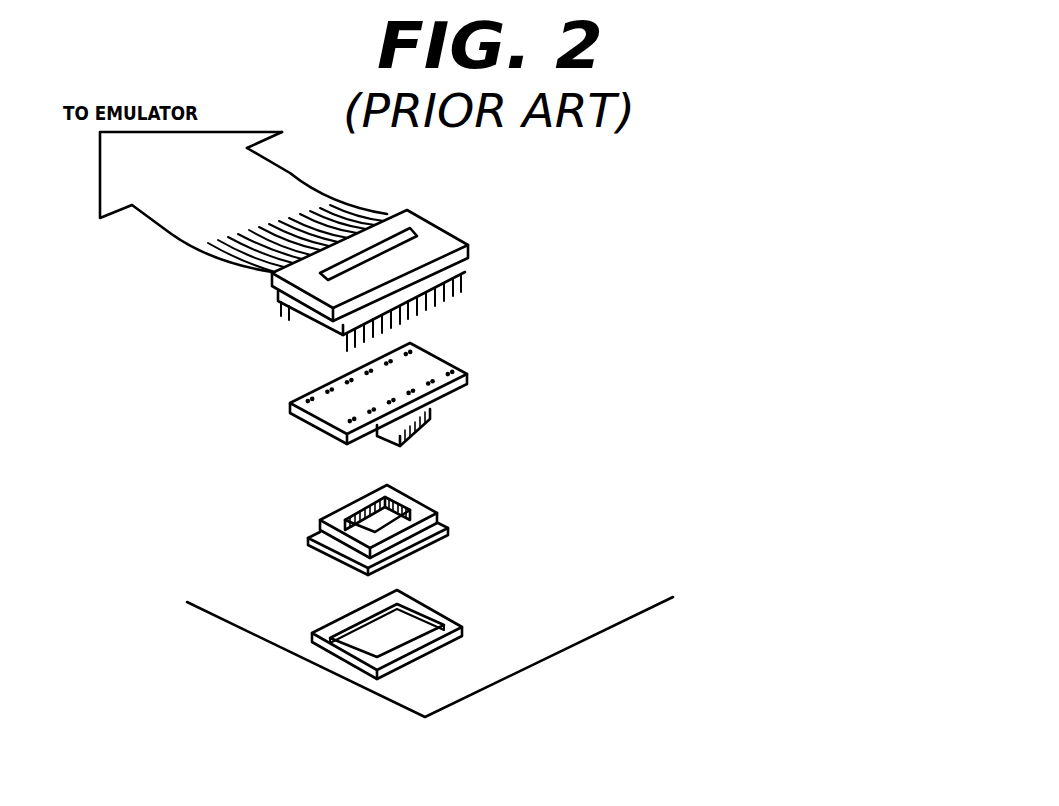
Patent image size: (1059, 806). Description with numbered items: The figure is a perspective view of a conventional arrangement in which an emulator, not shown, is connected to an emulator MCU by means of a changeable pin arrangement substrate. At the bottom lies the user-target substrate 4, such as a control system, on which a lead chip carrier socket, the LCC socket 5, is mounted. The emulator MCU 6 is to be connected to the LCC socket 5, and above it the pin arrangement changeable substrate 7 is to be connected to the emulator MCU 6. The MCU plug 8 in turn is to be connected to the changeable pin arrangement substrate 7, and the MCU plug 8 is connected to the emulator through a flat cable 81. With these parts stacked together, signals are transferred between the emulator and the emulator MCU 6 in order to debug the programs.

The flat cable 81 is at (288, 189).
The MCU plug 8 is at (440, 230).
The pin arrangement changeable substrate 7 is at (440, 365).
The emulator MCU 6 is at (442, 523).
The lead chip carrier socket 5 is at (432, 607).
The user-target substrate 4 is at (603, 597).